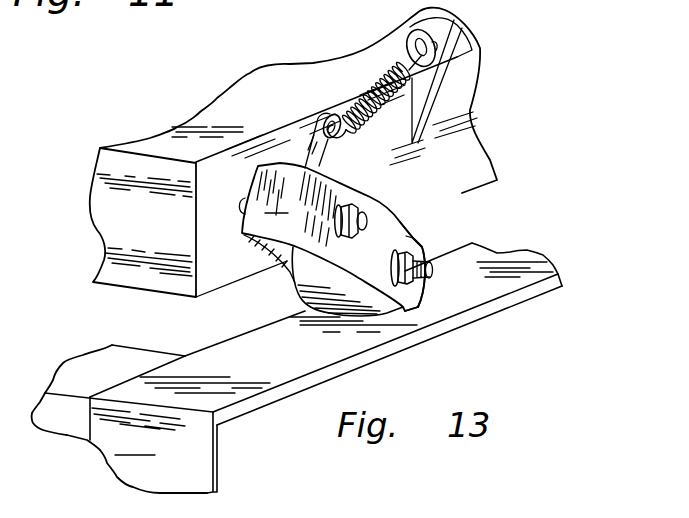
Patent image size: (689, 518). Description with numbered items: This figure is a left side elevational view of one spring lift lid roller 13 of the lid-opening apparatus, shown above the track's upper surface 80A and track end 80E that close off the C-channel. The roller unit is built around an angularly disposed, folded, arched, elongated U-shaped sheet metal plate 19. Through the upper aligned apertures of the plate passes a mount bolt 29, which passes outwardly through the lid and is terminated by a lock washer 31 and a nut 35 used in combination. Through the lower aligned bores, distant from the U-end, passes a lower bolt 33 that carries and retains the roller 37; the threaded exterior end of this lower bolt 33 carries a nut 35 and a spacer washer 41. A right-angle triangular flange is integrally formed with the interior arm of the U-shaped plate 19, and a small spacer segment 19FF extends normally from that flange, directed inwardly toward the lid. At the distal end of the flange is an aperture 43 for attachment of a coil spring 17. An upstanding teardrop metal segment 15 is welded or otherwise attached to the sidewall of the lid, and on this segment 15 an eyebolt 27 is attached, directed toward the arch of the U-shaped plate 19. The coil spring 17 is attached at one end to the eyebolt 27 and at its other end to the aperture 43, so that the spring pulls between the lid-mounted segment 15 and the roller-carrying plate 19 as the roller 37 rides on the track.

The spring lift lid roller 13 is at (243, 53).
The upstanding teardrop metal segment 15 is at (440, 96).
The coil spring 17 is at (372, 91).
The U-shaped sheet metal plate 19 is at (332, 237).
The spacer segment 19FF is at (318, 117).
The eyebolt 27 is at (408, 42).
The mount bolt 29 is at (370, 227).
The lock washer 31 is at (348, 206).
The lower bolt 33 is at (434, 268).
The nut 35 is at (366, 218).
The roller 37 is at (297, 292).
The spacer washer 41 is at (418, 251).
The aperture 43 is at (352, 132).
The upper surface 80A is at (533, 266).
The track end 80E is at (124, 419).